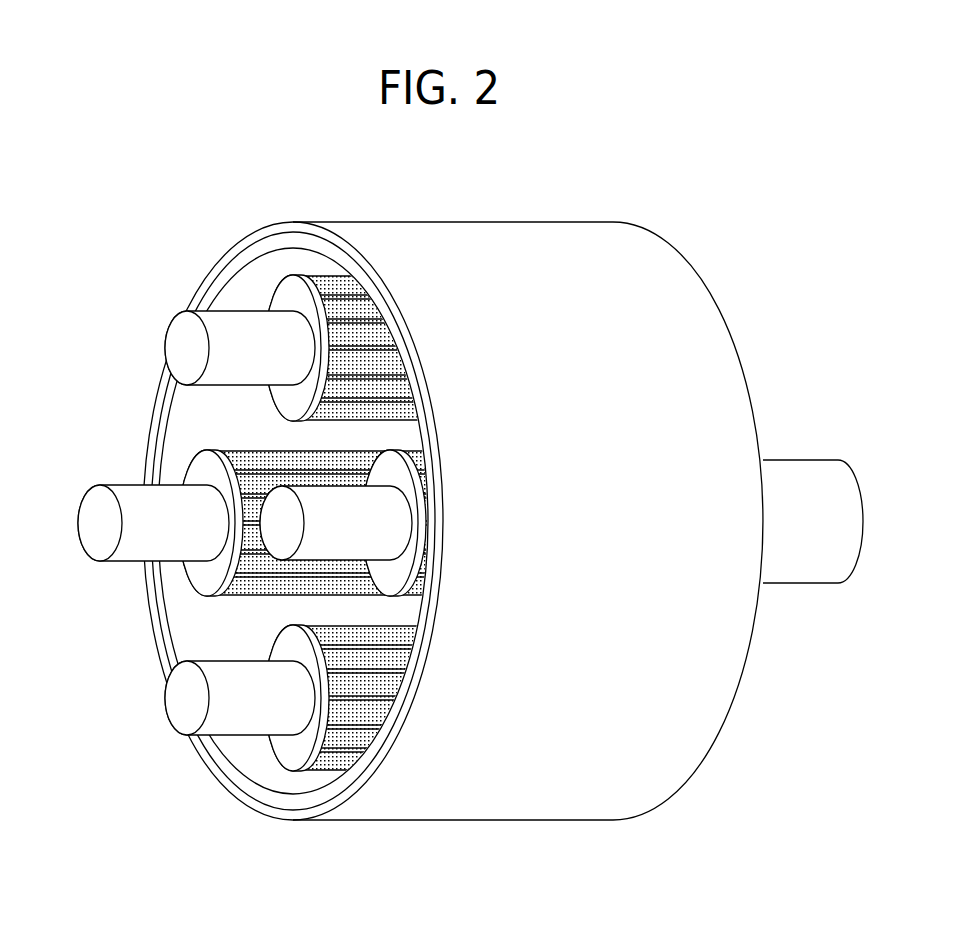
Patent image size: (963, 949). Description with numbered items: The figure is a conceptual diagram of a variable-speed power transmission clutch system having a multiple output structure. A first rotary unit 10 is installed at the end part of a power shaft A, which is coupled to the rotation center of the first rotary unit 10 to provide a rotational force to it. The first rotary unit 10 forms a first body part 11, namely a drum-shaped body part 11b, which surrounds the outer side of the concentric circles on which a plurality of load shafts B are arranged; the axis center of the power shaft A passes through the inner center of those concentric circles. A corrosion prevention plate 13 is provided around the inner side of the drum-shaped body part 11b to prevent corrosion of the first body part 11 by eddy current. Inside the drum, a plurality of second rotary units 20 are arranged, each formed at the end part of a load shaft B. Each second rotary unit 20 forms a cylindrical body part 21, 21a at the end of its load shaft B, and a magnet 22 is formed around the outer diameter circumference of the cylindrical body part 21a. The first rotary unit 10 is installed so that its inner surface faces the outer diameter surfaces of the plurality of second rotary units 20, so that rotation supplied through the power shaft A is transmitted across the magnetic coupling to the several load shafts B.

The first rotary unit 10 is at (722, 276).
The first body part 11 is at (266, 233).
The drum-shaped body part 11b is at (293, 521).
The corrosion prevention plate 13 is at (239, 271).
The second rotary unit 20 is at (170, 468).
The cylindrical body part 21 is at (214, 578).
The cylindrical body part 21a is at (211, 523).
The magnet 22 is at (272, 463).
The power shaft A is at (806, 478).
The load shaft B is at (90, 523).